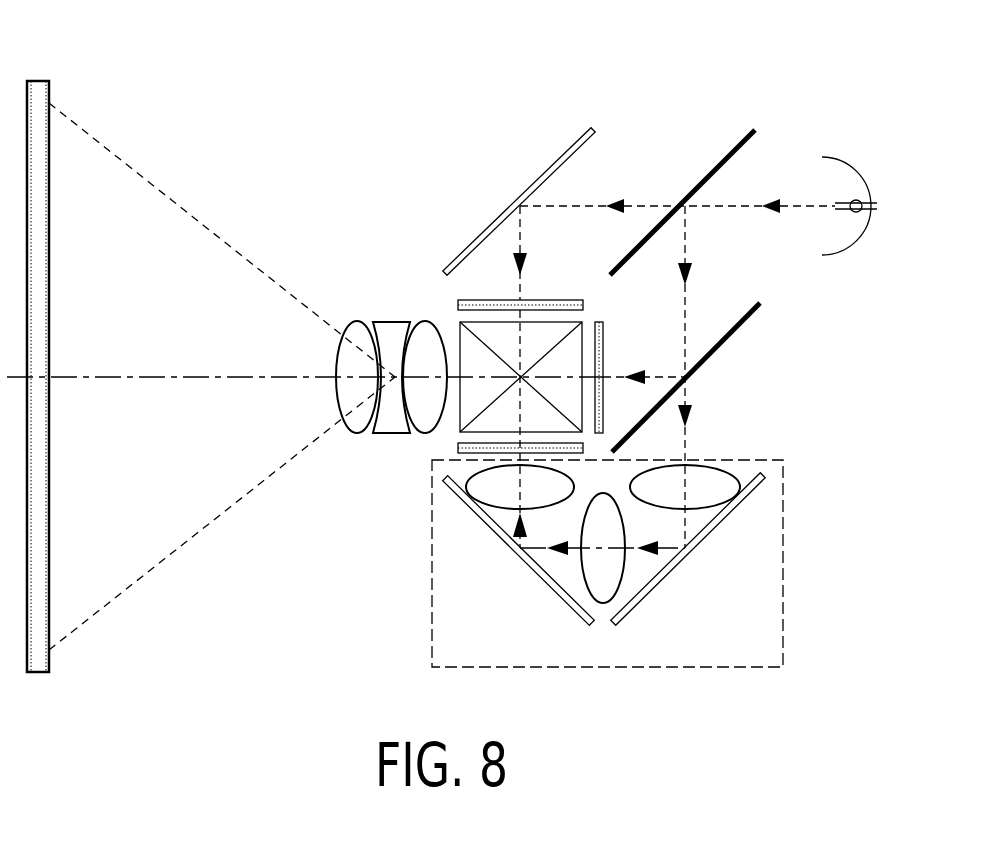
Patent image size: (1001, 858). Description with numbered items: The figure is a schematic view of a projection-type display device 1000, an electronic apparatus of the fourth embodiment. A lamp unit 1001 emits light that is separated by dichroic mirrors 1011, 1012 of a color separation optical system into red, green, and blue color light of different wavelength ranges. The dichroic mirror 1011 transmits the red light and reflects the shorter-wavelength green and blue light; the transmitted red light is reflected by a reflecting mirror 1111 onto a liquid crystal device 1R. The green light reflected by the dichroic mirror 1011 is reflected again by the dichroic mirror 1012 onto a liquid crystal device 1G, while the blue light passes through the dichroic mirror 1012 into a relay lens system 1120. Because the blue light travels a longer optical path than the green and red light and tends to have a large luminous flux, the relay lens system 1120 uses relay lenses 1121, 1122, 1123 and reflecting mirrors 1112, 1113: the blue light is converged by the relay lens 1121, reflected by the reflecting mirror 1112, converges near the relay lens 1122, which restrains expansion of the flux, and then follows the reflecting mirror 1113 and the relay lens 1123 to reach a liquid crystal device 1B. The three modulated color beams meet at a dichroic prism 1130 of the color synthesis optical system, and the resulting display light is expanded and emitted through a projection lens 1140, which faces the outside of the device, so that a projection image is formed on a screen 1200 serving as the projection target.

The projection-type display device 1000 is at (667, 43).
The lamp unit 1001 is at (855, 190).
The dichroic mirror 1011 is at (722, 162).
The dichroic mirror 1012 is at (723, 347).
The reflecting mirror 1111 is at (558, 162).
The reflecting mirror 1112 is at (638, 602).
The reflecting mirror 1113 is at (563, 598).
The relay lens system 1120 is at (642, 563).
The relay lens 1121 is at (708, 498).
The relay lens 1122 is at (612, 587).
The relay lens 1123 is at (493, 493).
The dichroic prism 1130 is at (473, 320).
The projection lens 1140 is at (445, 308).
The screen 1200 is at (49, 660).
The liquid crystal device 1R is at (495, 300).
The liquid crystal device 1G is at (603, 348).
The liquid crystal device 1B is at (456, 446).